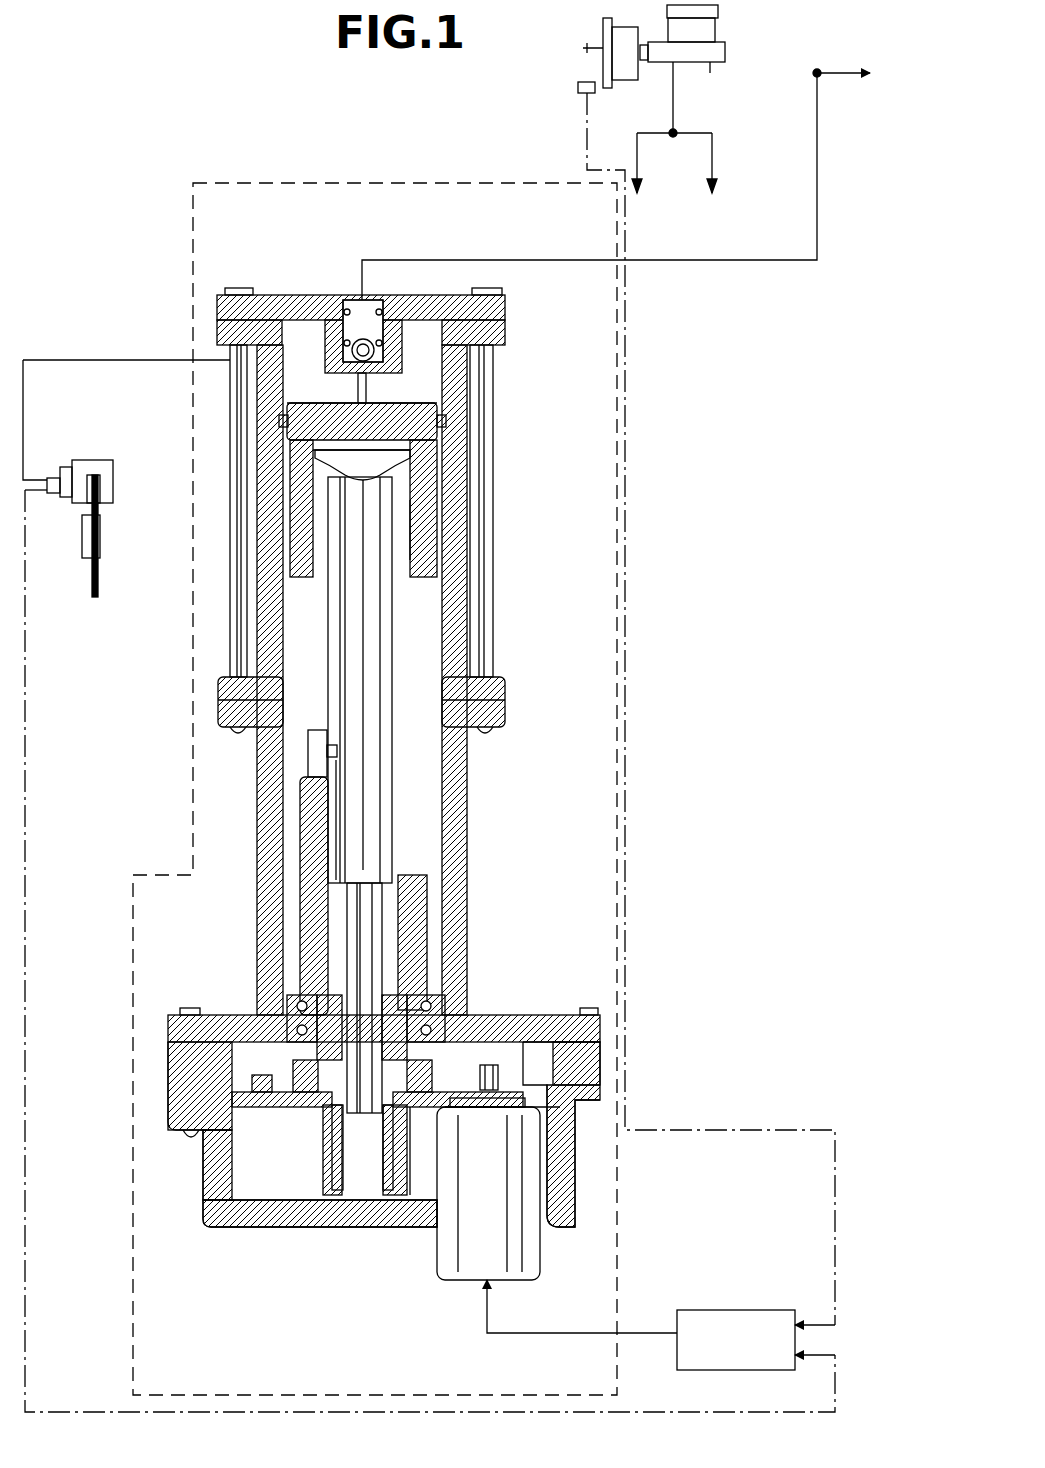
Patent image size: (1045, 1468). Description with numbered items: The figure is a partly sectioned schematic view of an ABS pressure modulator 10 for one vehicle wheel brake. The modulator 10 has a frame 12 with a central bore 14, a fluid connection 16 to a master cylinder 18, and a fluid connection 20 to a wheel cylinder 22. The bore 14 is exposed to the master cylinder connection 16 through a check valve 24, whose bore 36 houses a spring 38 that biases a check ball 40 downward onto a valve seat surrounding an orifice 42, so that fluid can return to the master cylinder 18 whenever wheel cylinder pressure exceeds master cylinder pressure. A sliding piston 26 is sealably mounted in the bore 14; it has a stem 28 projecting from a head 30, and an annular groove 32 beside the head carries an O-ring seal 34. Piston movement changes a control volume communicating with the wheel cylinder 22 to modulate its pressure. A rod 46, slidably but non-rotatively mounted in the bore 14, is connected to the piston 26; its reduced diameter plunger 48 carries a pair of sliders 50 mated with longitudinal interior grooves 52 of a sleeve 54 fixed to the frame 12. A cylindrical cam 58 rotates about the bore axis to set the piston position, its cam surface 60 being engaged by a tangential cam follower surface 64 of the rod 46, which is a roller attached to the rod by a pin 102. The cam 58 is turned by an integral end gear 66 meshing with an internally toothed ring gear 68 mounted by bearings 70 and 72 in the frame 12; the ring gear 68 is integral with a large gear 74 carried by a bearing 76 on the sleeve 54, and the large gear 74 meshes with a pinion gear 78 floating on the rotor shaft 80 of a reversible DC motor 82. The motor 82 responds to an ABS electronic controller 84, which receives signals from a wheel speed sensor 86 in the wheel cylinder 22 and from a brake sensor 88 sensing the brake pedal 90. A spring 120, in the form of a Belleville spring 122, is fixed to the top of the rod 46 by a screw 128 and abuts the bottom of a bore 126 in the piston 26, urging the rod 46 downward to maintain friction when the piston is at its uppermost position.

The ABS pressure modulator 10 is at (520, 660).
The frame 12 is at (290, 295).
The central bore 14 is at (447, 768).
The fluid connection 16 is at (362, 296).
The master cylinder 18 is at (716, 65).
The fluid connection 20 is at (230, 372).
The wheel cylinder 22 is at (78, 460).
The check valve 24 is at (400, 300).
The sliding piston 26 is at (437, 472).
The stem 28 is at (368, 388).
The head 30 is at (437, 405).
The annular groove 32 is at (447, 420).
The O-ring seal 34 is at (280, 425).
The bore 36 is at (395, 330).
The spring 38 is at (385, 320).
The check ball 40 is at (320, 350).
The orifice 42 is at (250, 398).
The rod 46 is at (330, 585).
The plunger 48 is at (385, 915).
The sliders 50 is at (378, 1170).
The longitudinal interior grooves 52 is at (390, 1170).
The sleeve 54 is at (410, 1205).
The cam 58 is at (427, 880).
The cam surface 60 is at (300, 782).
The cam follower surface 64 is at (308, 740).
The end gear 66 is at (432, 1000).
The ring gear 68 is at (342, 975).
The bearing 70 is at (437, 1008).
The bearing 72 is at (262, 1015).
The large gear 74 is at (262, 1078).
The bearing 76 is at (505, 1025).
The pinion gear 78 is at (600, 1022).
The rotor shaft 80 is at (500, 1080).
The reversible DC motor 82 is at (520, 1170).
The ABS electronic controller 84 is at (738, 1310).
The wheel speed sensor 86 is at (48, 496).
The brake sensor 88 is at (578, 94).
The brake pedal 90 is at (578, 80).
The pin 102 is at (340, 770).
The spring 120 is at (410, 468).
The Belleville spring 122 is at (295, 498).
The bore 126 is at (402, 512).
The screw 128 is at (375, 480).